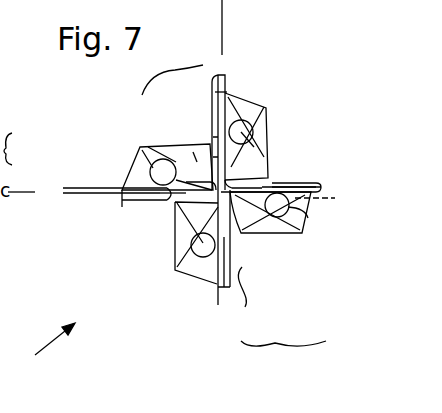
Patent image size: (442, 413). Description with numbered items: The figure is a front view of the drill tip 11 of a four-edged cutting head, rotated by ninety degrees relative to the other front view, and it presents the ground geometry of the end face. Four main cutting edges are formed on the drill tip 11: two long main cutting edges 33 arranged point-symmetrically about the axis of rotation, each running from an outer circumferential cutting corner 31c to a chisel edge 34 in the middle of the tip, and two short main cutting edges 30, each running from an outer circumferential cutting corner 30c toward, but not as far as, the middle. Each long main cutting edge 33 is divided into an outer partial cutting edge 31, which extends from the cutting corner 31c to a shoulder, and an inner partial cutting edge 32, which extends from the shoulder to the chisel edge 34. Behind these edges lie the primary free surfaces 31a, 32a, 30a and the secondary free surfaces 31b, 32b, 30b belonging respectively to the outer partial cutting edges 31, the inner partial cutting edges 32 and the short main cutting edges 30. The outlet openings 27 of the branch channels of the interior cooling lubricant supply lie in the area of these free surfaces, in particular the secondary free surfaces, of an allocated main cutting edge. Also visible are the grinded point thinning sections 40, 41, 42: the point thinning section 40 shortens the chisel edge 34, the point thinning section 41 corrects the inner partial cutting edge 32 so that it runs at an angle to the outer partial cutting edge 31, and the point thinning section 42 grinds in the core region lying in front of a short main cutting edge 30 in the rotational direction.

The drill tip 11 is at (42, 351).
The outlet openings 27 is at (127, 160).
The short main cutting edge 30 is at (298, 177).
The primary free surface 30a is at (321, 183).
The secondary free surface 30b is at (335, 198).
The cutting corner 30c is at (319, 178).
The outer partial cutting edge 31 is at (212, 107).
The primary free surface 31a is at (236, 88).
The secondary free surface 31b is at (251, 110).
The cutting corner 31c is at (220, 73).
The inner partial cutting edge 32 is at (193, 158).
The primary free surface 32a is at (268, 128).
The secondary free surface 32b is at (261, 157).
The long main cutting edge 33 is at (169, 210).
The chisel edge 34 is at (262, 222).
The point thinning section 40 is at (318, 213).
The point thinning section 41 is at (195, 147).
The point thinning section 42 is at (325, 152).